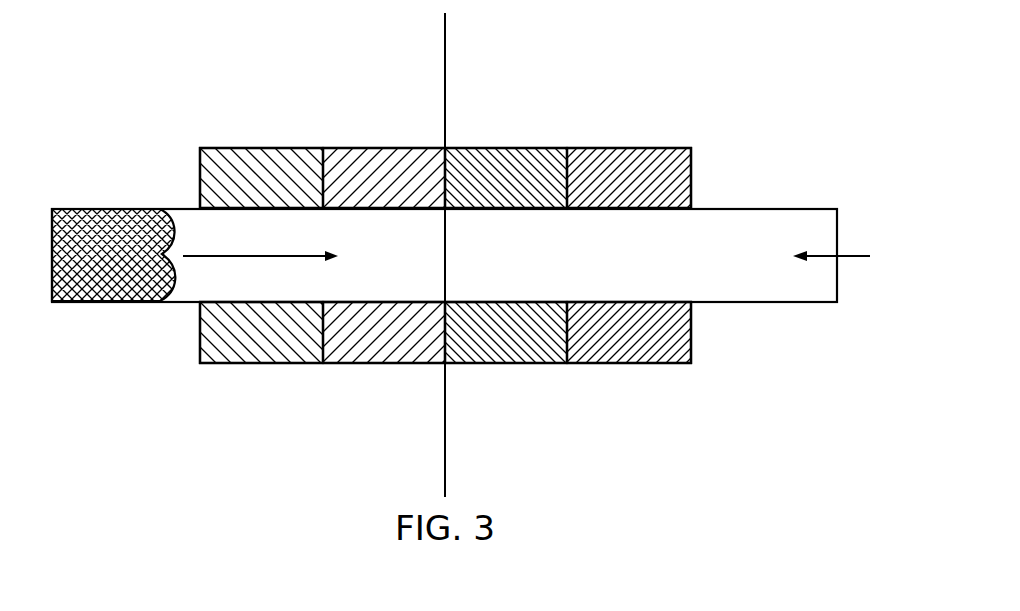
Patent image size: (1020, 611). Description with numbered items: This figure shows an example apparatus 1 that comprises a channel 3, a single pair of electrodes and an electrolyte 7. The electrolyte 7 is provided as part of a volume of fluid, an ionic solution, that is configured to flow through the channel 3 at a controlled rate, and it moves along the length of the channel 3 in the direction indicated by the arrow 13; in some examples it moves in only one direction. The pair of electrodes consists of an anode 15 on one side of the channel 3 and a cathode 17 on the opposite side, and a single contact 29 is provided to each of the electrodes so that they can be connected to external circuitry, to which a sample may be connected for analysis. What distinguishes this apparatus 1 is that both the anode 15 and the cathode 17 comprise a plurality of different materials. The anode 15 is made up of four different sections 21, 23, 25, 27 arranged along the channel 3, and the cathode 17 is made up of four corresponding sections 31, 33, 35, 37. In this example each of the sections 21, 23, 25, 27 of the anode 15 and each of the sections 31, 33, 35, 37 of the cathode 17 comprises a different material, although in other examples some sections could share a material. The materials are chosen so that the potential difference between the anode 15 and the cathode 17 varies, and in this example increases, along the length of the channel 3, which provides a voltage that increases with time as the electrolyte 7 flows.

The apparatus 1 is at (640, 60).
The channel 3 is at (845, 257).
The electrolyte 7 is at (102, 194).
The arrow 13 is at (280, 247).
The anode 15 is at (724, 175).
The cathode 17 is at (691, 327).
The section of the anode 21 is at (266, 162).
The section of the anode 23 is at (380, 162).
The section of the anode 25 is at (500, 162).
The section of the anode 27 is at (628, 160).
The contact 29 is at (447, 62).
The section of the cathode 31 is at (265, 352).
The section of the cathode 33 is at (382, 352).
The section of the cathode 35 is at (500, 352).
The section of the cathode 37 is at (628, 352).